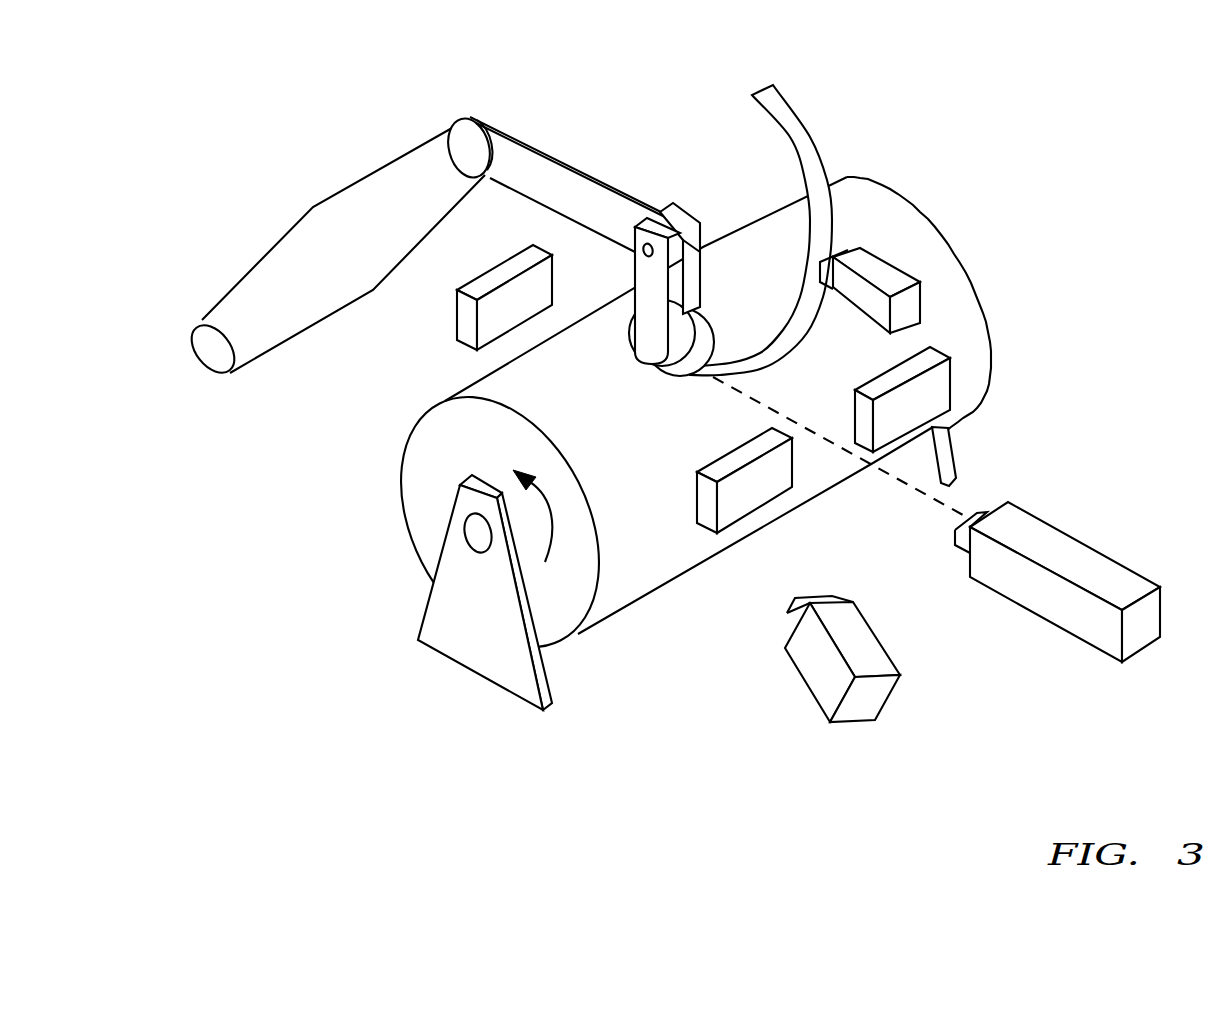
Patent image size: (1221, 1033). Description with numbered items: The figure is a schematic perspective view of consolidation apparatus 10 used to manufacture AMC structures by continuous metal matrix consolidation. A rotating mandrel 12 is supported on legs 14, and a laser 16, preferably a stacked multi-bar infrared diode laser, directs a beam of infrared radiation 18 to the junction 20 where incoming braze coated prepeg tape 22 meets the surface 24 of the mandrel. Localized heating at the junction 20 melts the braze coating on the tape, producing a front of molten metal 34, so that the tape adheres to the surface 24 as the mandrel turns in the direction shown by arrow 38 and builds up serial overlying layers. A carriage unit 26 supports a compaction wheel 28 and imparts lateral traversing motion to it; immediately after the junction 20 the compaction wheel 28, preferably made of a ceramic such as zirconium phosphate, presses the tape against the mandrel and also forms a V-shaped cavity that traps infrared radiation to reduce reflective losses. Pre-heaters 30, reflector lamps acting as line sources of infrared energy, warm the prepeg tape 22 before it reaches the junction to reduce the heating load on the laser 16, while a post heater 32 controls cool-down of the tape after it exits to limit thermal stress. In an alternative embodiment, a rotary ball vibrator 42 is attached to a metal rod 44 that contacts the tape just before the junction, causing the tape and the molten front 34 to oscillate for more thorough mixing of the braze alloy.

The consolidation apparatus 10 is at (380, 748).
The rotating mandrel 12 is at (418, 495).
The legs 14 is at (463, 640).
The laser 16 is at (1115, 577).
The beam of infrared radiation 18 is at (900, 480).
The junction 20 is at (693, 380).
The braze coated prepeg tape 22 is at (800, 118).
The surface 24 is at (972, 289).
The carriage unit 26 is at (576, 114).
The compaction wheel 28 is at (627, 340).
The pre-heaters 30 is at (697, 490).
The post heater 32 is at (467, 317).
The front of molten metal 34 is at (817, 663).
The arrow 38 is at (555, 522).
The rotary ball vibrator 42 is at (870, 313).
The metal rod 44 is at (840, 253).